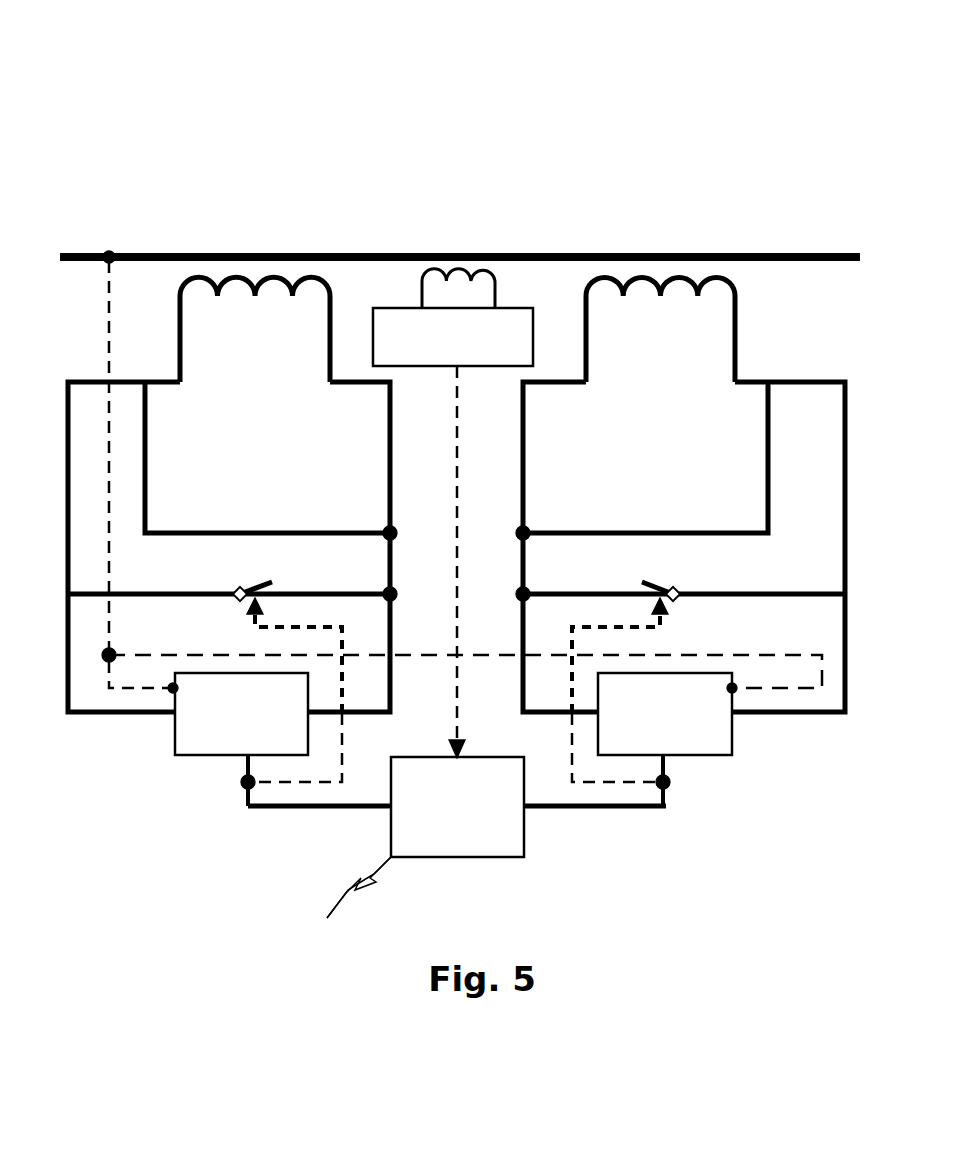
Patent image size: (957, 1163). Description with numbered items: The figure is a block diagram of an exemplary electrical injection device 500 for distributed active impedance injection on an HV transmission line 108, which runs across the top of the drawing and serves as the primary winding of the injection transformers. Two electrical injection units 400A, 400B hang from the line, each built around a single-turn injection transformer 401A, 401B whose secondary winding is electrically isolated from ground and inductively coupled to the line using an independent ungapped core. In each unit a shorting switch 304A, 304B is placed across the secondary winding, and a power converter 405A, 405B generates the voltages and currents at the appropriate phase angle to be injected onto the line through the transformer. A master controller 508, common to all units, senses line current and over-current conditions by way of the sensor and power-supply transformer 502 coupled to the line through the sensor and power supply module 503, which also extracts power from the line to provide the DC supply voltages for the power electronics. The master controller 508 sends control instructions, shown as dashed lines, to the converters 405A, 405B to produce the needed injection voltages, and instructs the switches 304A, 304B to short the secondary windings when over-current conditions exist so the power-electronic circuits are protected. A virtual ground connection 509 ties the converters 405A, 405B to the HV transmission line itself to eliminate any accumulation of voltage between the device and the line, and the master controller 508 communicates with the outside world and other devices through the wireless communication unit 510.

The EID block diagram 500 is at (340, 94).
The HV transmission line 108 is at (511, 255).
The electrical injection unit 400A is at (241, 180).
The second injection block 400B is at (691, 195).
The single-turn injection transformer 401A is at (256, 290).
The single-turn injection transformer 401B is at (658, 290).
The shorting switch 304A is at (262, 584).
The shorting switch 304B is at (650, 584).
The power converter 405A is at (175, 753).
The power converter 405B is at (735, 750).
The sensor and power-supply transformer 502 is at (477, 258).
The sensor and power supply module 503 is at (420, 305).
The master controller 508 is at (525, 822).
The virtual ground connection 509 is at (115, 288).
The wireless communication unit 510 is at (362, 892).